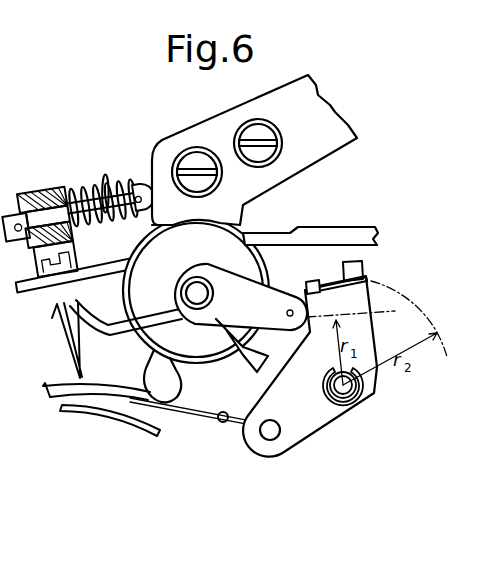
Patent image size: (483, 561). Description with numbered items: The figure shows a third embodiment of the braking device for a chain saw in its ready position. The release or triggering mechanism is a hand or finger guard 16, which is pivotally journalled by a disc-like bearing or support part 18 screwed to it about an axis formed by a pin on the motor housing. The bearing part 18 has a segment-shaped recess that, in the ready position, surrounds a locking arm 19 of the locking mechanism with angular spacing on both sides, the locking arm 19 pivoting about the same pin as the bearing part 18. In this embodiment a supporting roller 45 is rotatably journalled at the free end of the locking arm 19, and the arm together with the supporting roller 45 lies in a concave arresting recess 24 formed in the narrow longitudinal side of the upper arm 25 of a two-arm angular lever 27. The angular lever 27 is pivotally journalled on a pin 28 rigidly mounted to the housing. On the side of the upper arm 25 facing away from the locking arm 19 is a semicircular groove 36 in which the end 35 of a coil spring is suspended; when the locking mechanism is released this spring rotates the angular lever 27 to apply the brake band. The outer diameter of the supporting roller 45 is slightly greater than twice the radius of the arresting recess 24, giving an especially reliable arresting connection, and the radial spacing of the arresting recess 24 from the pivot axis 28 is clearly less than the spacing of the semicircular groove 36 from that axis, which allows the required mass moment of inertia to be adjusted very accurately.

The hand or finger guard 16 is at (328, 118).
The bearing or support part 18 is at (230, 246).
The locking arm 19 is at (250, 305).
The arresting recess 24 is at (362, 318).
The upper arm 25 is at (360, 296).
The angular lever 27 is at (333, 443).
The pin 28 is at (362, 387).
The end of the coil spring 35 is at (318, 284).
The semicircular groove 36 is at (366, 278).
The supporting roller 45 is at (290, 332).